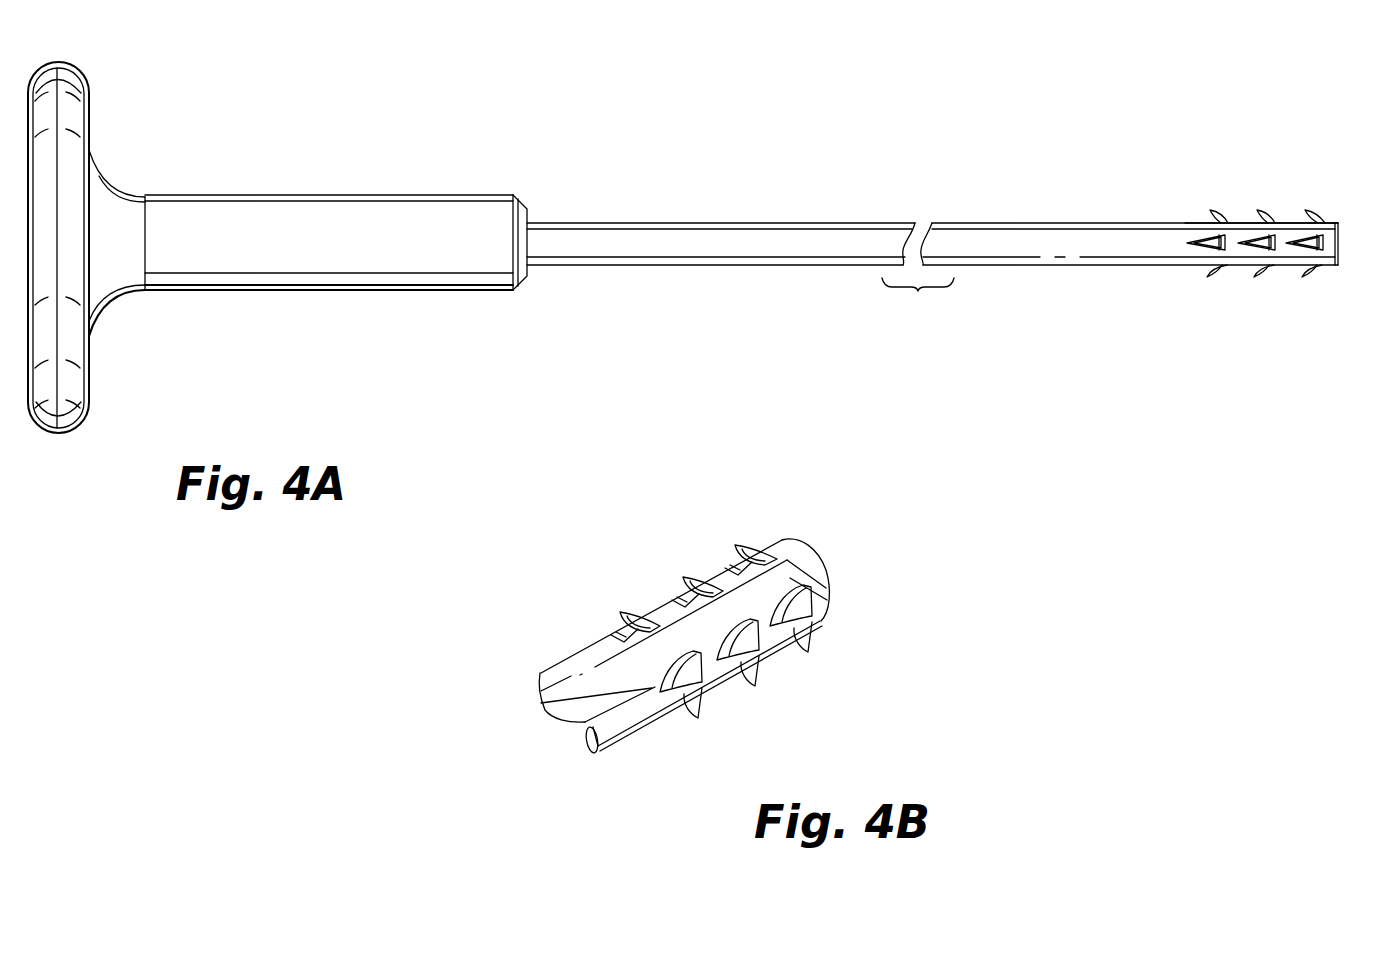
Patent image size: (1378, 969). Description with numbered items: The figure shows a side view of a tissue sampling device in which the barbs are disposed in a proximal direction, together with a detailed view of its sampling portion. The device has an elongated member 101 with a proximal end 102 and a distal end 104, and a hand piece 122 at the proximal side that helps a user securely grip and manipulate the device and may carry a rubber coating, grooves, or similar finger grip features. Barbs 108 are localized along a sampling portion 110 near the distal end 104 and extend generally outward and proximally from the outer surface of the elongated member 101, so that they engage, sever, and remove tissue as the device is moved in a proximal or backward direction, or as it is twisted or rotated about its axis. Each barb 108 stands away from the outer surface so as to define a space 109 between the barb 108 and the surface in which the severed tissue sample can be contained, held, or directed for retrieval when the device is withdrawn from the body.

In FIG. 4A, the elongated member 101 is at (838, 236).
In FIG. 4B, the elongated member 101 is at (613, 726).
In FIG. 4A, the proximal end 102 is at (583, 218).
In FIG. 4A, the distal end 104 is at (1352, 258).
In FIG. 4B, the distal end 104 is at (820, 544).
In FIG. 4A, the barbs 108 is at (1216, 274).
In FIG. 4B, the barbs 108 is at (633, 612).
In FIG. 4B, the space 109 is at (620, 633).
In FIG. 4A, the sampling portion 110 is at (1268, 183).
In FIG. 4A, the hand piece 122 is at (287, 318).